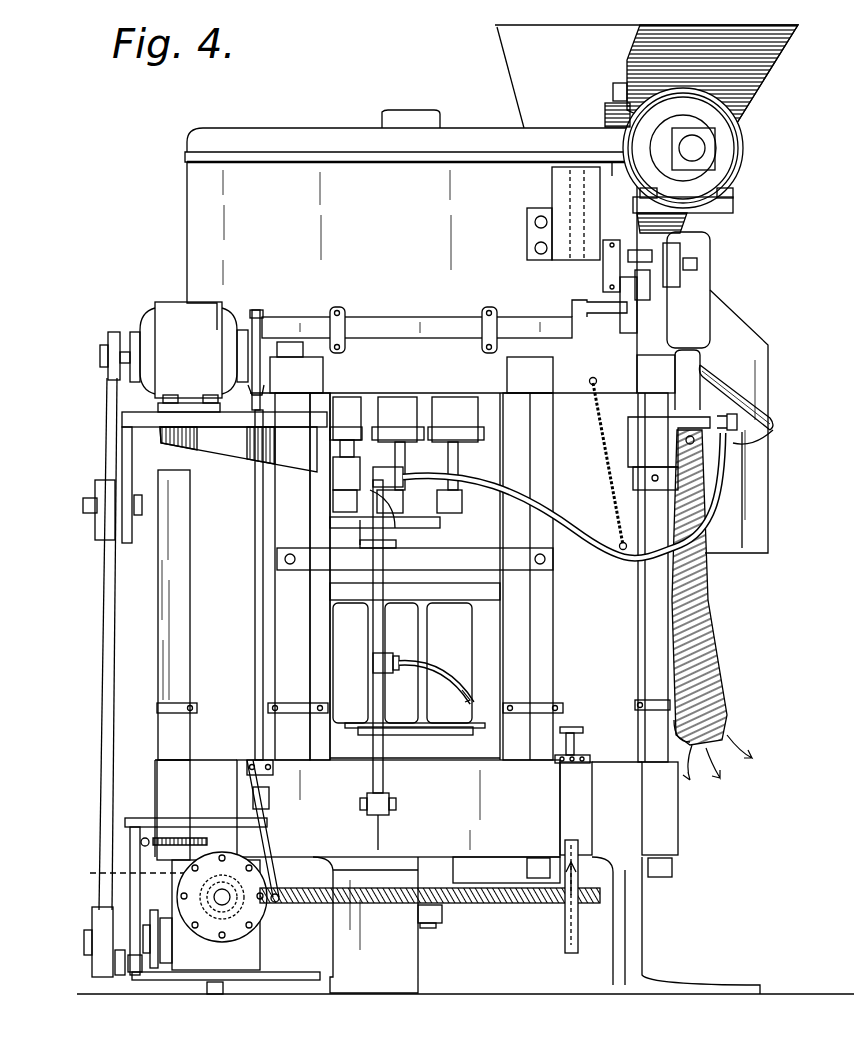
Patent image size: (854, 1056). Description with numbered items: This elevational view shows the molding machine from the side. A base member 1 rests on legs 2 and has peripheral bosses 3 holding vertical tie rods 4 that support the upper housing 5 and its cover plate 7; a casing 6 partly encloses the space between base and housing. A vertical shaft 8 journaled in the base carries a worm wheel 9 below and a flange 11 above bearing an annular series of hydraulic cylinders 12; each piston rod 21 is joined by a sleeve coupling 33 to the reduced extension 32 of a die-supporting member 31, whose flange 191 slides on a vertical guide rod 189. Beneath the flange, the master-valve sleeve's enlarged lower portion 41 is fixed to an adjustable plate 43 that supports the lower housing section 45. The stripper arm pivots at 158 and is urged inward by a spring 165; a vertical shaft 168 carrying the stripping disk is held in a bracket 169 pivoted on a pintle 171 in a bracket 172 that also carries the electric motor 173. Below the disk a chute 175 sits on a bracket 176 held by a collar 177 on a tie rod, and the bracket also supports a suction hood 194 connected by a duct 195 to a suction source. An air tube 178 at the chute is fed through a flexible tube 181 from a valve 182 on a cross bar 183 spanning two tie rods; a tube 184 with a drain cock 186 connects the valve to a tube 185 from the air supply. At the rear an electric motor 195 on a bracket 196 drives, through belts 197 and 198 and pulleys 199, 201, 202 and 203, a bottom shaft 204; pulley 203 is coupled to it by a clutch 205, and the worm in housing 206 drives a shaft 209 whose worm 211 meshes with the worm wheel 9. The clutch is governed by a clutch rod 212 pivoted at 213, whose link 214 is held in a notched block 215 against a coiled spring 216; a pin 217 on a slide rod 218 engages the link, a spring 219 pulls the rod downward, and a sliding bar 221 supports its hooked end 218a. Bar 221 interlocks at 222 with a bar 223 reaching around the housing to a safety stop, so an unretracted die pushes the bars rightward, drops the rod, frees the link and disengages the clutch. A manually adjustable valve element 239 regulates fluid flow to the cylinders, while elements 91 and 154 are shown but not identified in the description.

The base member 1 is at (480, 845).
The legs 2 is at (395, 952).
The bosses 3 is at (158, 762).
The vertical tie rods 4 is at (163, 610).
The upper housing 5 is at (197, 201).
The casing 6 is at (205, 676).
The cover plate 7 is at (290, 128).
The vertical shaft 8 is at (430, 928).
The worm wheel 9 is at (512, 905).
The flange 11 is at (350, 595).
The hydraulic cylinders 12 is at (402, 663).
The piston rod 21 is at (345, 535).
The cylindrical member 31 is at (428, 455).
The extension 32 is at (340, 483).
The sleeve coupling 33 is at (335, 505).
The lower enlarged portion 41 is at (415, 738).
The plate 43 is at (352, 757).
The lower section 45 is at (475, 727).
The hopper 91 is at (652, 30).
The cylinder 154 is at (345, 440).
The pivot 158 is at (604, 270).
The spring 165 is at (650, 278).
The vertical shaft 168 is at (612, 90).
The bracket 169 is at (608, 170).
The pintle 171 is at (552, 168).
The bracket 172 is at (528, 240).
The electric motor 173 is at (745, 157).
The chute 175 is at (740, 410).
The bracket 176 is at (645, 456).
The collar 177 is at (640, 482).
The tube 178 is at (737, 424).
The flexible tube 181 is at (744, 470).
The valve 182 is at (372, 530).
The cross bar 183 is at (520, 570).
The tube 184 is at (380, 622).
The tube 185 is at (443, 668).
The drain cock 186 is at (390, 812).
The vertical rods 189 is at (372, 395).
The flange 191 is at (455, 430).
The suction hood 194 is at (708, 245).
The electric motor 195 is at (152, 304).
The bracket 196 is at (135, 412).
The belt 197 is at (104, 440).
The belt 198 is at (103, 668).
The pulley 199 is at (108, 340).
The pulley 201 is at (96, 485).
The pulley 202 is at (84, 503).
The pulley 203 is at (97, 910).
The shaft 204 is at (150, 915).
The clutch 205 is at (120, 975).
The housing 206 is at (226, 916).
The shaft 209 is at (228, 890).
The worm 211 is at (126, 871).
The clutch rod 212 is at (130, 857).
The pivot 213 is at (135, 968).
The link 214 is at (213, 820).
The block 215 is at (270, 803).
The coiled spring 216 is at (175, 838).
The pin 217 is at (255, 760).
The slide rod 218 is at (256, 568).
The hooked upper end 218a is at (256, 310).
The spring 219 is at (268, 838).
The slide bar 221 is at (283, 318).
The interlock 222 is at (572, 310).
The bar 223 is at (607, 322).
The manually adjustable valve element 239 is at (570, 727).